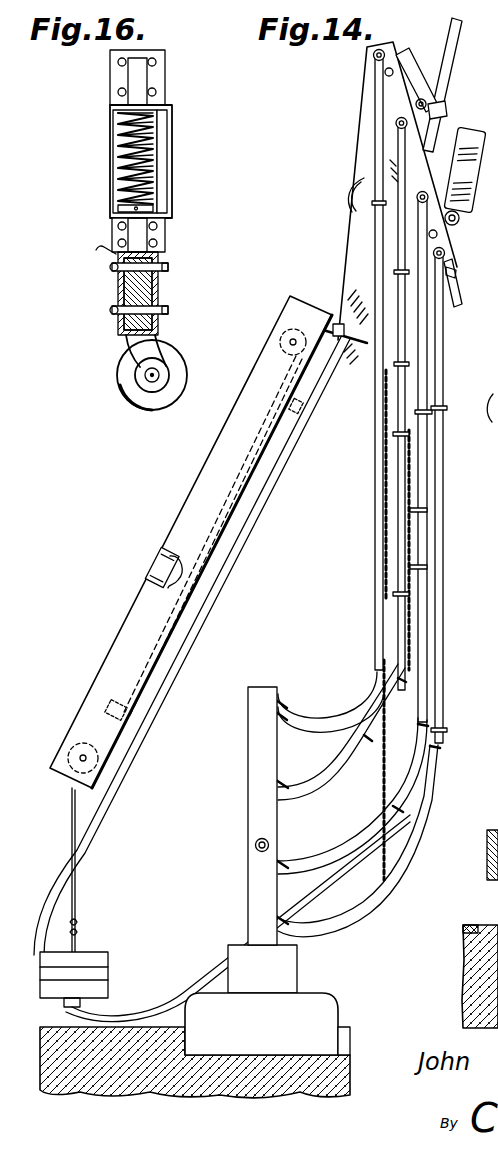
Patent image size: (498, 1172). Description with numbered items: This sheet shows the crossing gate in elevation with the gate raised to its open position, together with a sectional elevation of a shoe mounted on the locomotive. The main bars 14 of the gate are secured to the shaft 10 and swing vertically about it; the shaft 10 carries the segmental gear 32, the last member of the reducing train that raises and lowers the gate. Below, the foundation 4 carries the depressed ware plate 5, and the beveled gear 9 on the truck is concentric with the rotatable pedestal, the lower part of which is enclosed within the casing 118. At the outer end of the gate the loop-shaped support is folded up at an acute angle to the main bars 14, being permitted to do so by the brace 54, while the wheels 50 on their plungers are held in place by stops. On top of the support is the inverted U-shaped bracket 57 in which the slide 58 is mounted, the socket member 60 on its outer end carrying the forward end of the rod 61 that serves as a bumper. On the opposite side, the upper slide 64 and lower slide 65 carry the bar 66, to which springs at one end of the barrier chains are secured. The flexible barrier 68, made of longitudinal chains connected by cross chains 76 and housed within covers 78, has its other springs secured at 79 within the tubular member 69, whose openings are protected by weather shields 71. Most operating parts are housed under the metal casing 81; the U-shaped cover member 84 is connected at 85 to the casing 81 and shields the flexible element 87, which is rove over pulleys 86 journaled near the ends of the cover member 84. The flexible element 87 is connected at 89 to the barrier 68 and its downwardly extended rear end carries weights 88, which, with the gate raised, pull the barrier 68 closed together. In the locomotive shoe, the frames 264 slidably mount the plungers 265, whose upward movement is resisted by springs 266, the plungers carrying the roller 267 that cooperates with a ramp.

In FIG. 14, the foundation 4 is at (142, 1090).
In FIG. 14, the ware plate 5 is at (478, 922).
In FIG. 14, the beveled gear 9 is at (490, 828).
In FIG. 14, the shaft 10 is at (255, 846).
In FIG. 14, the main bars 14 is at (355, 239).
In FIG. 14, the segmental gear 32 is at (471, 313).
In FIG. 14, the wheels 50 is at (455, 306).
In FIG. 14, the brace 54 is at (362, 505).
In FIG. 14, the inverted U-shaped bracket 57 is at (409, 58).
In FIG. 14, the slide 58 is at (428, 104).
In FIG. 14, the socket member 60 is at (447, 110).
In FIG. 14, the rod 61 is at (462, 28).
In FIG. 14, the upper slide 64 is at (386, 75).
In FIG. 14, the lower slide 65 is at (460, 228).
In FIG. 14, the bar 66 is at (395, 112).
In FIG. 14, the flexible barrier 68 is at (446, 390).
In FIG. 14, the tubular member 69 is at (248, 704).
In FIG. 14, the weather shields 71 is at (283, 702).
In FIG. 14, the cross chains 76 is at (410, 632).
In FIG. 14, the covers 78 is at (341, 716).
In FIG. 14, the securing point of springs 79 is at (373, 56).
In FIG. 14, the metal casing 81 is at (222, 678).
In FIG. 14, the U-shaped cover member 84 is at (258, 353).
In FIG. 14, the connection of cover member 85 is at (300, 410).
In FIG. 14, the pulleys 86 is at (282, 322).
In FIG. 14, the flexible element 87 is at (158, 563).
In FIG. 14, the weights 88 is at (104, 952).
In FIG. 14, the connection of flexible element 89 is at (338, 324).
In FIG. 14, the casing 118 is at (272, 985).
In FIG. 16, the frames 264 is at (172, 168).
In FIG. 16, the plungers 265 is at (140, 131).
In FIG. 16, the springs 266 is at (112, 162).
In FIG. 16, the roller 267 is at (128, 392).